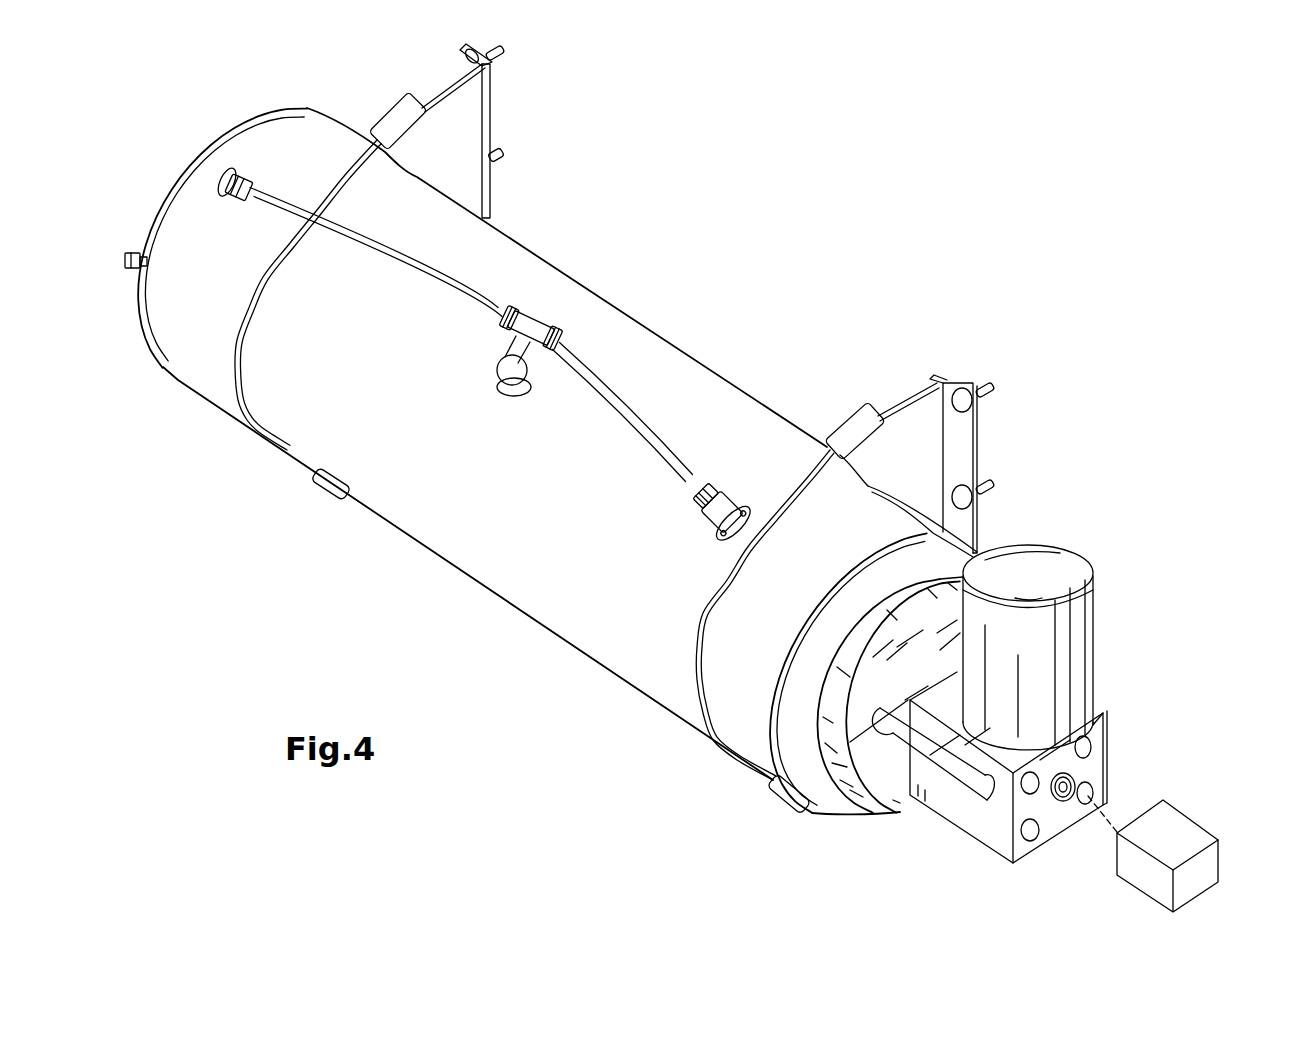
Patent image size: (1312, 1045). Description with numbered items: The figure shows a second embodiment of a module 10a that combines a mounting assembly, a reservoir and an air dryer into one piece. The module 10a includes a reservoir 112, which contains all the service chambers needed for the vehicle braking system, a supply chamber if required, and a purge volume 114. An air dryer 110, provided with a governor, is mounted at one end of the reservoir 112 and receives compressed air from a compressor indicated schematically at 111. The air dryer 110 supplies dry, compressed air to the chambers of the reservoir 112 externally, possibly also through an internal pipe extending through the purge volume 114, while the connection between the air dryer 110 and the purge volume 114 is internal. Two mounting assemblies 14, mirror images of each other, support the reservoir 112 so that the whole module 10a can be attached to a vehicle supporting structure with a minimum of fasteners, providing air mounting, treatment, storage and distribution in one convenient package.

The module 10a is at (347, 538).
The mounting assemblies 14 is at (491, 107).
The air dryer 110 is at (1097, 633).
The compressor 111 is at (1170, 833).
The reservoir 112 is at (713, 372).
The purge volume 114 is at (828, 765).